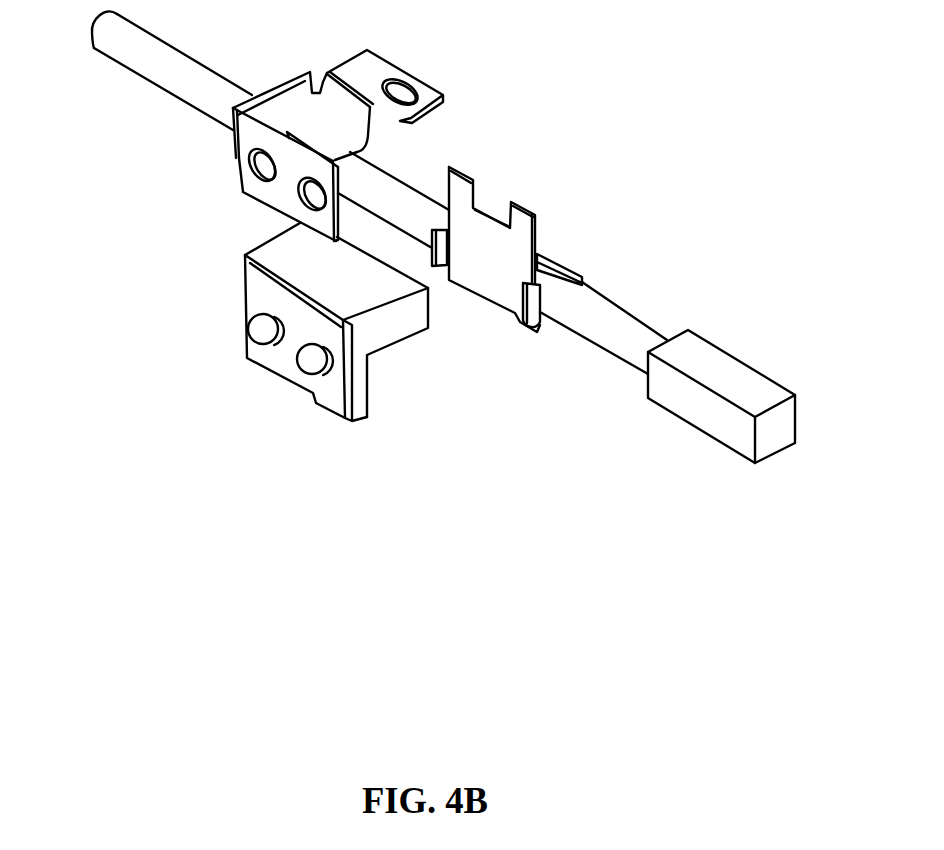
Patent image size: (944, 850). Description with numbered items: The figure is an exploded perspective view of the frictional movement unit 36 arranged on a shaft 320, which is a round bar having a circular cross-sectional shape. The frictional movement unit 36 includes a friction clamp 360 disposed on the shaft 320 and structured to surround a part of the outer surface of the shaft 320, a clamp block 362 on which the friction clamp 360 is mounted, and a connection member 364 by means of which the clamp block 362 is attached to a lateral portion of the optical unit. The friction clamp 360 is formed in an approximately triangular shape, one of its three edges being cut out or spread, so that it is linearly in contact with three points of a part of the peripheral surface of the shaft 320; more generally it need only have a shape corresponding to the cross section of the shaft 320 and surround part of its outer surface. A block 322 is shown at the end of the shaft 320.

The frictional movement unit 36 is at (327, 377).
The shaft 320 is at (379, 331).
The end block 322 is at (738, 494).
The friction clamp 360 is at (483, 377).
The clamp block 362 is at (331, 405).
The connection member 364 is at (267, 318).